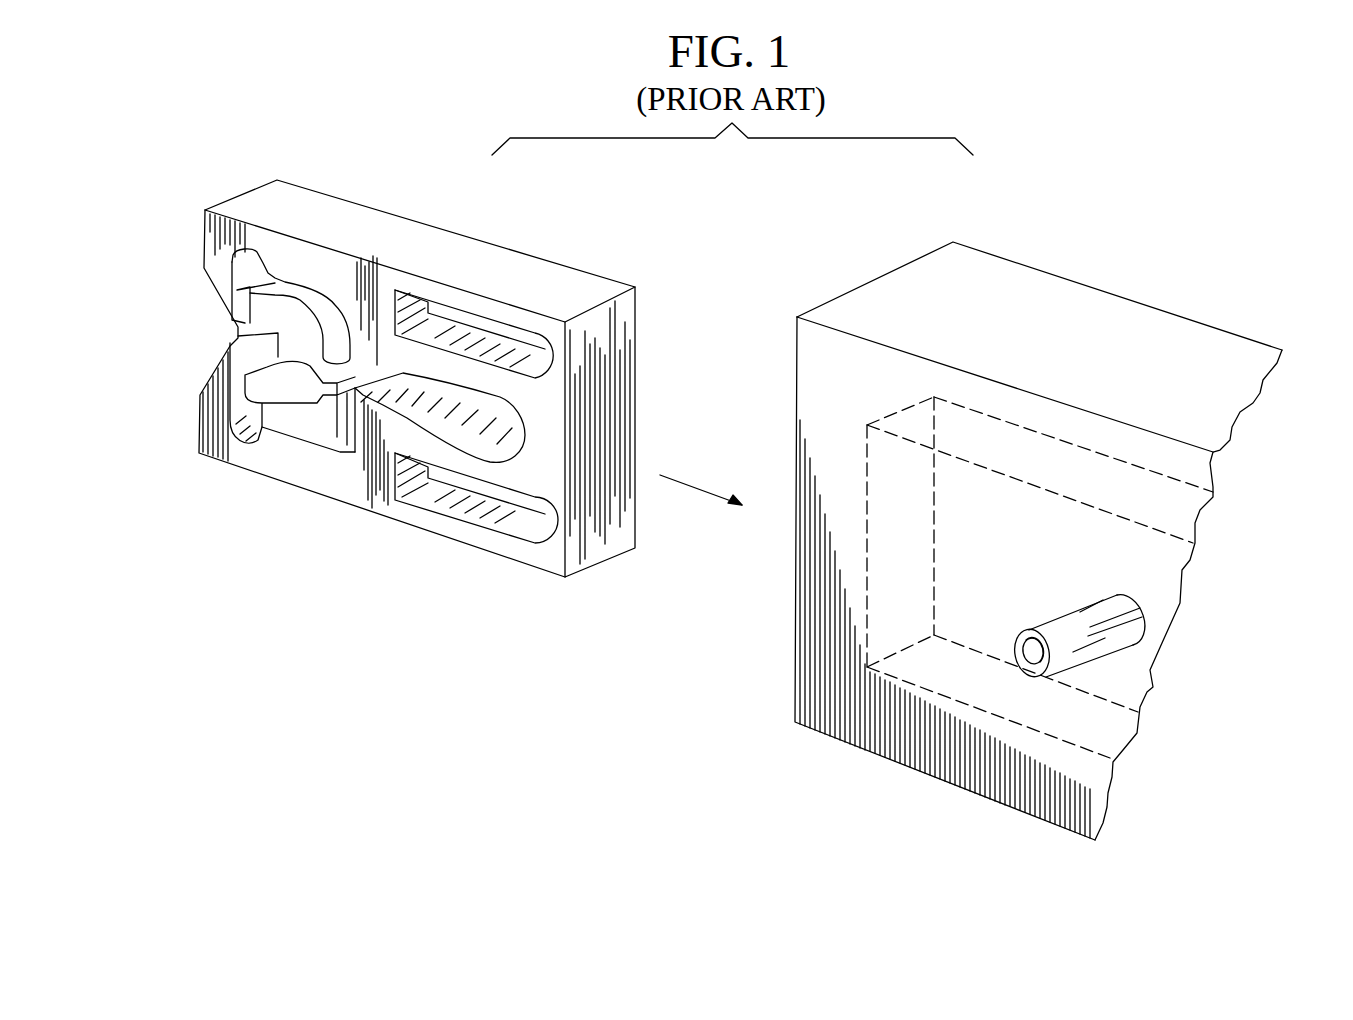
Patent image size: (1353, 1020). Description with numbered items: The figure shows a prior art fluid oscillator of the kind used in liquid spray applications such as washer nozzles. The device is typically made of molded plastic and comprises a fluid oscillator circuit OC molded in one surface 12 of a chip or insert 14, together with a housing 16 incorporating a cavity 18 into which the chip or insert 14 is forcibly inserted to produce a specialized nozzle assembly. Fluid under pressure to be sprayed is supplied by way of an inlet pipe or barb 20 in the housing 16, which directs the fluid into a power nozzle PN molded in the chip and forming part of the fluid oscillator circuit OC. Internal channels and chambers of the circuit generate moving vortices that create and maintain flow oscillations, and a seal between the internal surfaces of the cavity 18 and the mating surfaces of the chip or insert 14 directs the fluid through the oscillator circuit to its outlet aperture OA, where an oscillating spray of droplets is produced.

The surface 12 is at (360, 275).
The chip or insert 14 is at (509, 262).
The power nozzle PN is at (482, 405).
The outlet aperture OA is at (236, 339).
The fluid oscillator circuit OC is at (276, 511).
The housing 16 is at (1100, 312).
The cavity 18 is at (903, 423).
The inlet pipe or barb 20 is at (1104, 639).